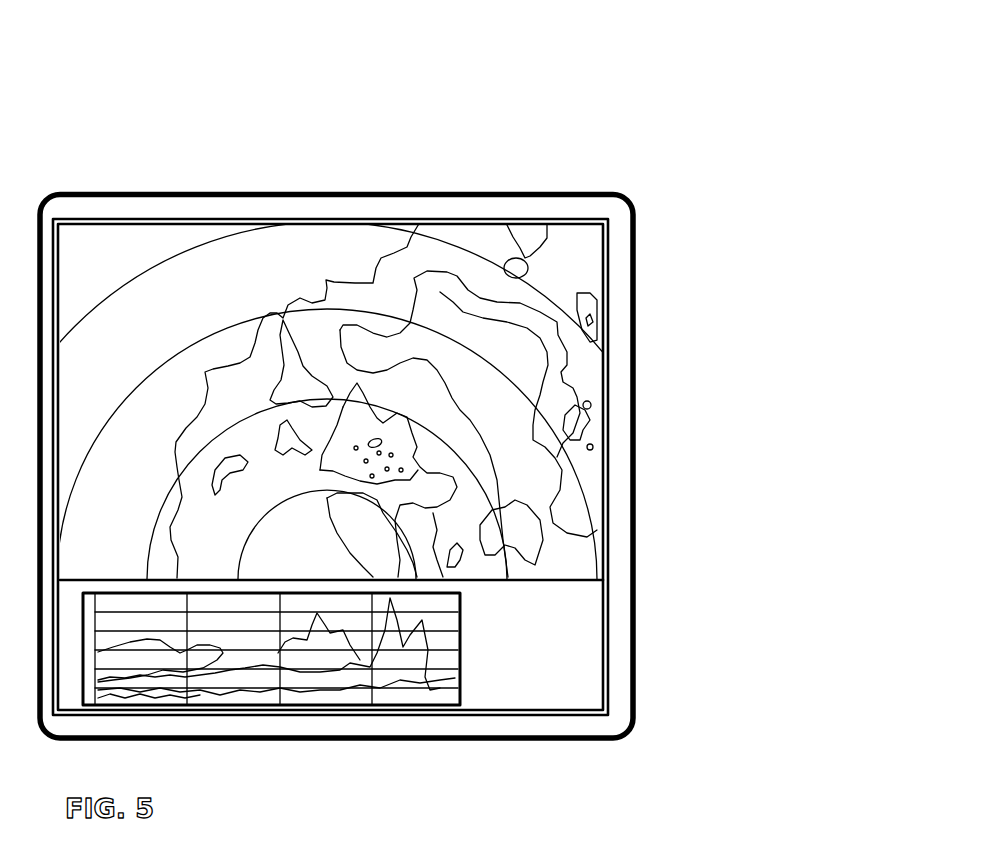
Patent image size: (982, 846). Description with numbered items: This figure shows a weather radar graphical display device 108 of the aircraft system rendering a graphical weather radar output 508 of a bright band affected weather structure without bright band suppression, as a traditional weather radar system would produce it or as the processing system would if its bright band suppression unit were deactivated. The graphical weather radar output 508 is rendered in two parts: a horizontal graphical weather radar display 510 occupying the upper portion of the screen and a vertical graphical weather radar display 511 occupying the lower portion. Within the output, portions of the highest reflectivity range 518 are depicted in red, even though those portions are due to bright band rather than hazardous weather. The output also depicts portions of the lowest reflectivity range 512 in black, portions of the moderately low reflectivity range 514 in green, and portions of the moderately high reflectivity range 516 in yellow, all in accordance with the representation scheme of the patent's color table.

The weather radar graphical display device 108 is at (414, 377).
The graphical weather radar output 508 is at (392, 503).
The horizontal graphical weather radar display 510 is at (396, 467).
The vertical graphical weather radar display 511 is at (342, 649).
The lowest reflectivity range 512 is at (342, 500).
The moderately low reflectivity range 514 is at (361, 501).
The moderately high reflectivity range 516 is at (391, 582).
The highest reflectivity range 518 is at (375, 566).